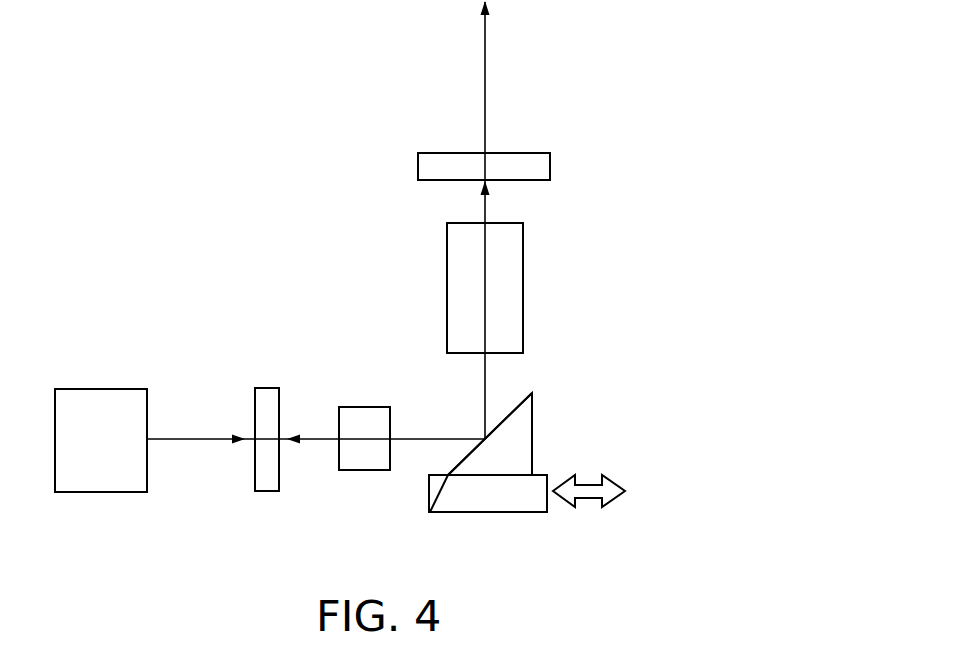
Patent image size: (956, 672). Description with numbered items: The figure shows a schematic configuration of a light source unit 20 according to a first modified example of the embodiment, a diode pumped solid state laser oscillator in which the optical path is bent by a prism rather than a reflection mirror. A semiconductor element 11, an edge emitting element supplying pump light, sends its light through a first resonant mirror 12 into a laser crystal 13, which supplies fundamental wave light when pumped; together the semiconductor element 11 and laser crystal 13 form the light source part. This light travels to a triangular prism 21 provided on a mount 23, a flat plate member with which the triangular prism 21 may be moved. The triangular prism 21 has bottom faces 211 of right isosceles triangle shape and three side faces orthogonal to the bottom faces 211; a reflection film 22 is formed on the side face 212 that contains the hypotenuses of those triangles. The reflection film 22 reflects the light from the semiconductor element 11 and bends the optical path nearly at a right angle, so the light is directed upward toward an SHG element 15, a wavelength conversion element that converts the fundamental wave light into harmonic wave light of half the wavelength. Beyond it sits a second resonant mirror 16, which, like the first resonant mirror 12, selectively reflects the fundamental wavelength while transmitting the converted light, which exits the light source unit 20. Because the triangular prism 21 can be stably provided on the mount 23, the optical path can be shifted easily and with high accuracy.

The light source unit 20 is at (186, 54).
The semiconductor element 11 is at (102, 395).
The first resonant mirror 12 is at (267, 395).
The laser crystal 13 is at (370, 418).
The SHG element 15 is at (513, 281).
The second resonant mirror 16 is at (543, 166).
The triangular prism 21 is at (556, 417).
The reflection film 22 is at (519, 401).
The bottom faces 211 is at (517, 448).
The side face 212 is at (468, 462).
The mount 23 is at (488, 505).